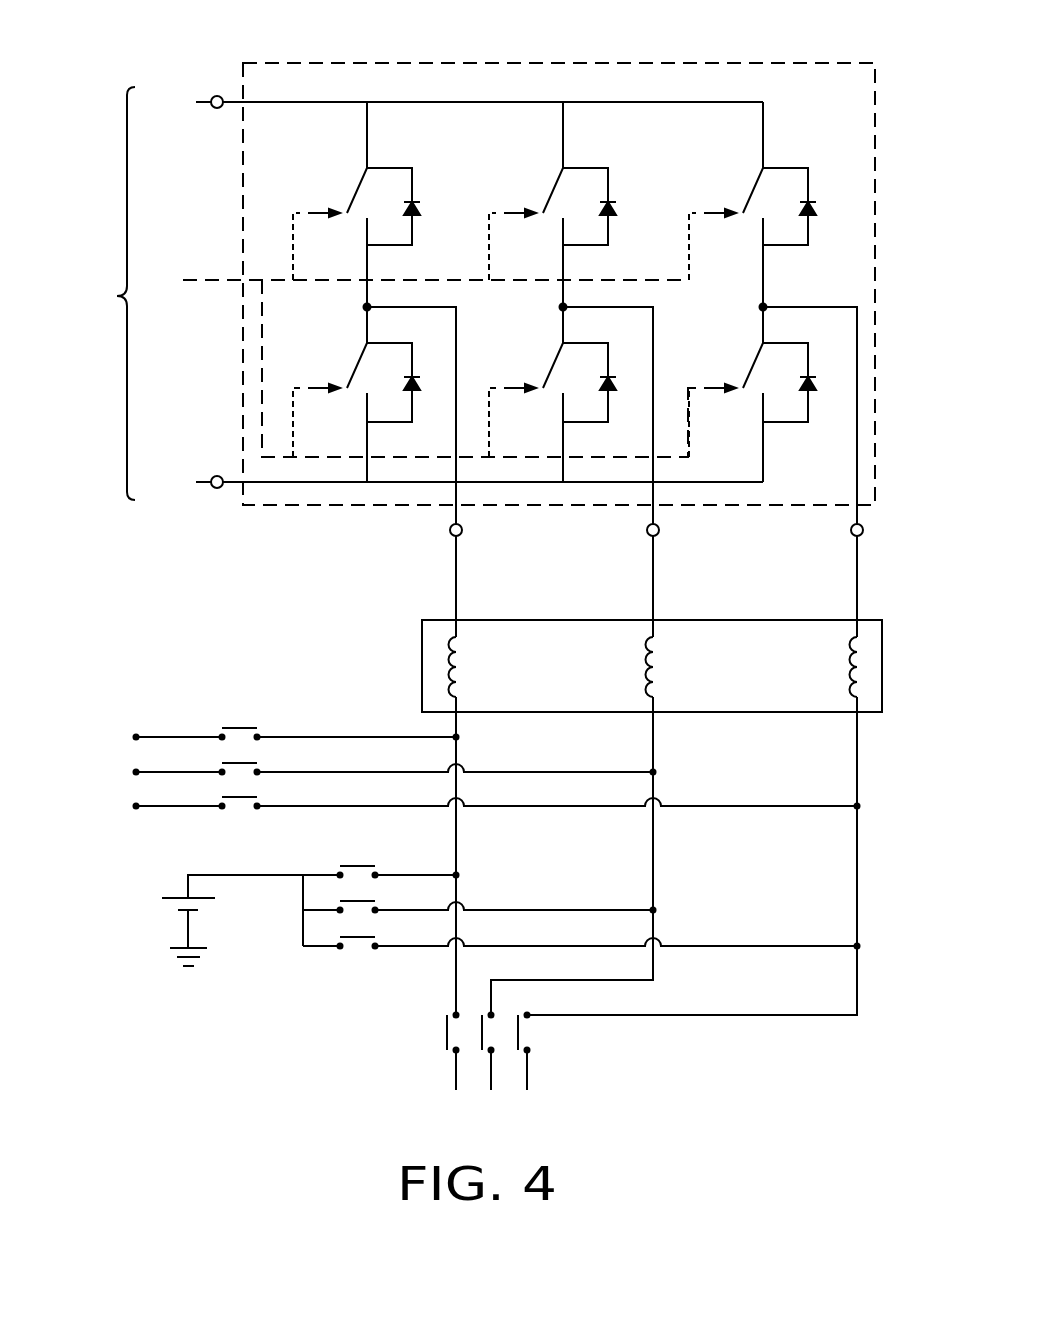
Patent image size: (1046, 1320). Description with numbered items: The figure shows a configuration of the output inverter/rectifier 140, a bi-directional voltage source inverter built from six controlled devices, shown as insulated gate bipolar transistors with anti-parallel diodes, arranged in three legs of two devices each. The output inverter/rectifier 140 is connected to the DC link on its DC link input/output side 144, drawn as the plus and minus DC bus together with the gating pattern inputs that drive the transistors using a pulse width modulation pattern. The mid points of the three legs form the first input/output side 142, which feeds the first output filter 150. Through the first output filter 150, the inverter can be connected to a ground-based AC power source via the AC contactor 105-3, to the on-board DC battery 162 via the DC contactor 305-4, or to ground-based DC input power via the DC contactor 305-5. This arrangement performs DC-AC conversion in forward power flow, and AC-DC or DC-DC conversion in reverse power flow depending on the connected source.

The output inverter/rectifier 140 is at (752, 62).
The DC link input/output side 144 is at (116, 300).
The first input/output side 142 is at (878, 555).
The first output filter 150 is at (437, 618).
The AC contactor 105-3 is at (463, 757).
The DC contactor 305-4 is at (582, 923).
The DC contactor 305-5 is at (524, 1081).
The DC battery 162 is at (165, 912).